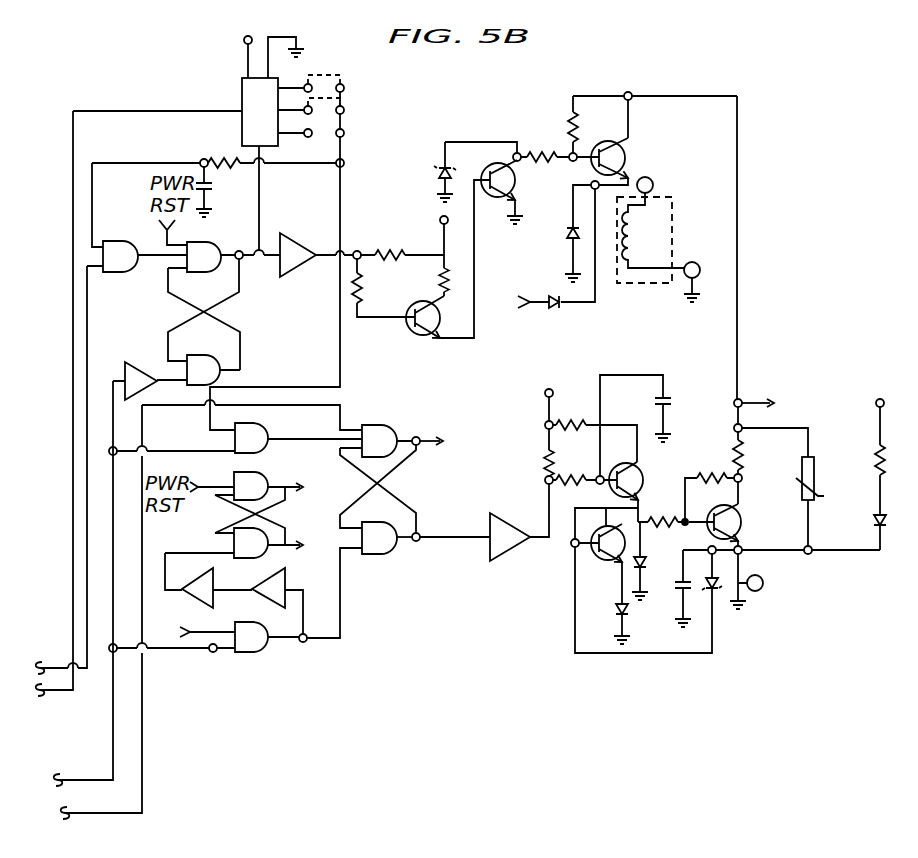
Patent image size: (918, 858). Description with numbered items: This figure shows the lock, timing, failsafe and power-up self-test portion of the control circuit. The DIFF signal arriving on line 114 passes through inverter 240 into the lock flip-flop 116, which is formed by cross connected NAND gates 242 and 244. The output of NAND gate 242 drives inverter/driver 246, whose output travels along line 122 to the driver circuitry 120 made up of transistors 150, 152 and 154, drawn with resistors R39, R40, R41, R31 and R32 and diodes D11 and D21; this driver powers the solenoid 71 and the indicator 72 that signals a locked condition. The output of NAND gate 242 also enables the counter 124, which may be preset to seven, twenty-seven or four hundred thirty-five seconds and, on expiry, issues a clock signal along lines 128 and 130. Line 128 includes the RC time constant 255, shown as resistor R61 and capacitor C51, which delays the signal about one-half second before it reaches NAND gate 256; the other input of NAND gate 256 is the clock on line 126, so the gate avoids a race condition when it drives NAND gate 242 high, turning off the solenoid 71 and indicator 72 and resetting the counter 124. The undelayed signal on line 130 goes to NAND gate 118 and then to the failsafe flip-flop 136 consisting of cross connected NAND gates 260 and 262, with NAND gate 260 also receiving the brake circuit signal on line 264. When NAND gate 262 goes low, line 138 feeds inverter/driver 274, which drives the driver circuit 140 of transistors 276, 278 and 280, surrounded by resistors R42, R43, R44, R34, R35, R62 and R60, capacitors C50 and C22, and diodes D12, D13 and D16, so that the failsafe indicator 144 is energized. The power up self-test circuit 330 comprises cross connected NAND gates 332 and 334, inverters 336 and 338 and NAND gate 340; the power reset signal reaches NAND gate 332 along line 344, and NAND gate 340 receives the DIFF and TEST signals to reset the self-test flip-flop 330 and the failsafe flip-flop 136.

The lock flip-flop 116 is at (64, 318).
The line 126 is at (59, 664).
The line 114 is at (91, 778).
The line 264 is at (145, 720).
The counter 124 is at (242, 86).
The line 130 is at (342, 185).
The line 128 is at (326, 166).
The RC time constant 255 is at (202, 150).
The resistor R61 is at (229, 154).
The capacitor C51 is at (225, 192).
The NAND gate 256 is at (134, 240).
The NAND gate 242 is at (222, 240).
The NAND gate 244 is at (222, 380).
The inverter 240 is at (143, 362).
The inverter/driver 246 is at (306, 242).
The line 122 is at (356, 251).
The resistor R40 is at (402, 246).
The resistor R41 is at (446, 296).
The resistor R39 is at (383, 288).
The transistor 150 is at (410, 333).
The transistor 152 is at (517, 182).
The resistor R31 is at (550, 152).
The resistor R32 is at (570, 114).
The driver circuitry 120 is at (627, 86).
The transistor 154 is at (630, 156).
The diode D11 is at (570, 244).
The diode D21 is at (558, 310).
The solenoid 71 is at (630, 246).
The indicator 72 is at (696, 268).
The line 344 is at (212, 487).
The NAND gate 118 is at (269, 434).
The NAND gate 332 is at (267, 474).
The NAND gate 334 is at (270, 558).
The power up self-test circuit 330 is at (210, 517).
The inverter 336 is at (198, 604).
The inverter 338 is at (277, 604).
The NAND gate 340 is at (258, 652).
The NAND gate 260 is at (378, 424).
The failsafe flip-flop 136 is at (402, 432).
The NAND gate 262 is at (378, 554).
The line 138 is at (455, 540).
The inverter/driver 274 is at (506, 520).
The resistor R43 is at (539, 457).
The resistor R44 is at (573, 413).
The resistor R42 is at (545, 476).
The capacitor C50 is at (660, 388).
The transistor 276 is at (638, 480).
The transistor 278 is at (606, 508).
The resistor R34 is at (663, 510).
The diode D13 is at (642, 566).
The diode D12 is at (616, 616).
The resistor R35 is at (706, 468).
The resistor R62 is at (740, 470).
The transistor 280 is at (742, 527).
The failsafe indicator 144 is at (763, 587).
The capacitor C22 is at (670, 590).
The driver circuit 140 is at (650, 664).
The resistor R60 is at (865, 458).
The diode D16 is at (872, 519).